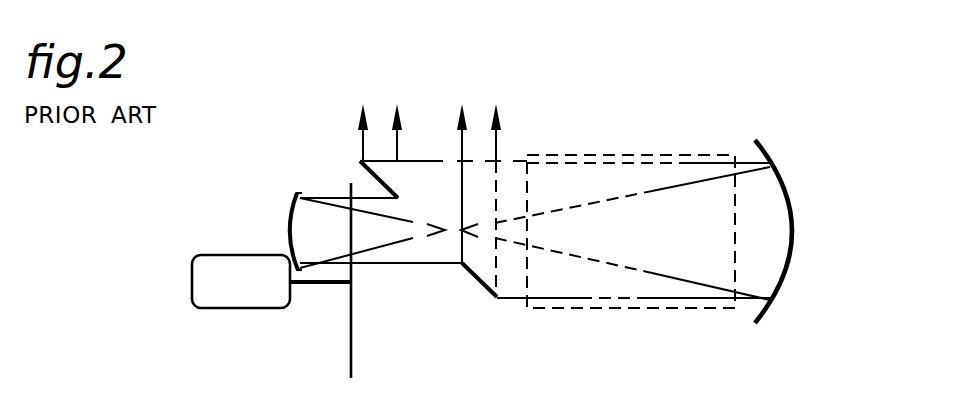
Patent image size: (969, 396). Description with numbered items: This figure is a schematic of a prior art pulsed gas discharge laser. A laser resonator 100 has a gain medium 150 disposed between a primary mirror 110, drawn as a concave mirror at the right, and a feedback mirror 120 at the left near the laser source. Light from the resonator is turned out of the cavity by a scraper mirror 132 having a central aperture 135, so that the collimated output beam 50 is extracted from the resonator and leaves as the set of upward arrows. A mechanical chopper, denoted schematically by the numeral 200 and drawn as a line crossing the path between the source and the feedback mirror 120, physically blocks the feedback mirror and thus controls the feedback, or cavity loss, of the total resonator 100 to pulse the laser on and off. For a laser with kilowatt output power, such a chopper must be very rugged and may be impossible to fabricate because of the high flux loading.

The collimated output beam 50 is at (510, 91).
The laser resonator 100 is at (627, 132).
The primary mirror 110 is at (787, 183).
The feedback mirror 120 is at (290, 222).
The scraper mirror 132 is at (467, 271).
The central aperture 135 is at (454, 214).
The gain medium 150 is at (657, 155).
The mechanical chopper 200 is at (352, 315).